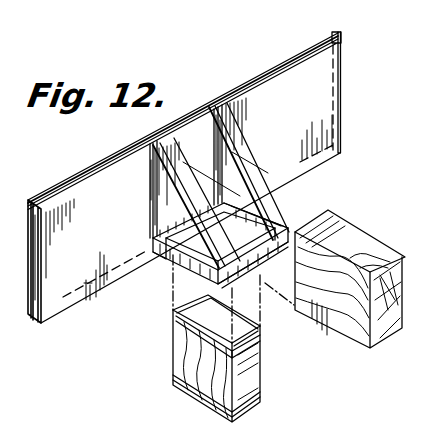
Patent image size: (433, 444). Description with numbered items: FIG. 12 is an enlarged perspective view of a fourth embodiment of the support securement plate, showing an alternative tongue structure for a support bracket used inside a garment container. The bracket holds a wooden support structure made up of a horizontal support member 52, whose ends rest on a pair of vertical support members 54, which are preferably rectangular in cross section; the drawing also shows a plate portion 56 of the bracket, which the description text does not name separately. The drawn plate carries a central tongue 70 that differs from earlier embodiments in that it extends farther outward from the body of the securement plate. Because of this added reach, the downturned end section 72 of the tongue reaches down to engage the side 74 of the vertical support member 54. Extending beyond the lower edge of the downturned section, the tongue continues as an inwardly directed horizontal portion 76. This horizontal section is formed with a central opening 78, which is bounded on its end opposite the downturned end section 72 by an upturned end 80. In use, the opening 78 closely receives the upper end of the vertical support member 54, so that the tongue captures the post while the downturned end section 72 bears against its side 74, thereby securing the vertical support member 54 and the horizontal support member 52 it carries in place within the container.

The horizontal support member 52 is at (383, 238).
The vertical support member 54 is at (262, 393).
The top rail 56 is at (293, 51).
The central tongue 70 is at (243, 137).
The downturned end section 72 is at (256, 276).
The side 74 is at (260, 400).
The horizontal portion 76 is at (158, 266).
The central opening 78 is at (237, 218).
The upturned end 80 is at (156, 232).